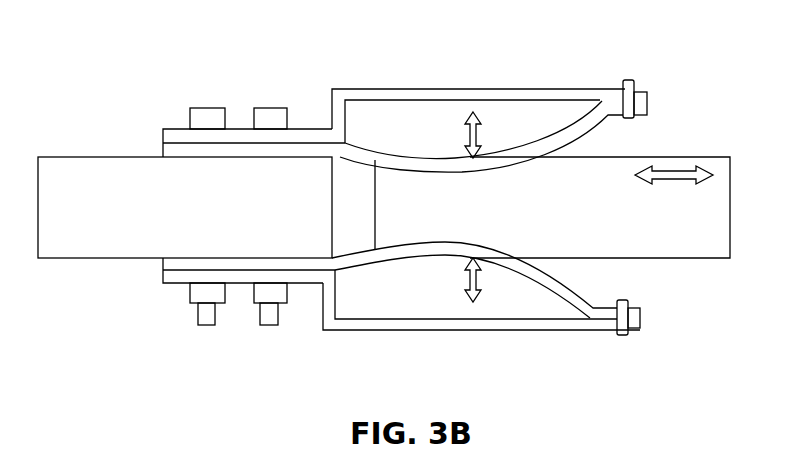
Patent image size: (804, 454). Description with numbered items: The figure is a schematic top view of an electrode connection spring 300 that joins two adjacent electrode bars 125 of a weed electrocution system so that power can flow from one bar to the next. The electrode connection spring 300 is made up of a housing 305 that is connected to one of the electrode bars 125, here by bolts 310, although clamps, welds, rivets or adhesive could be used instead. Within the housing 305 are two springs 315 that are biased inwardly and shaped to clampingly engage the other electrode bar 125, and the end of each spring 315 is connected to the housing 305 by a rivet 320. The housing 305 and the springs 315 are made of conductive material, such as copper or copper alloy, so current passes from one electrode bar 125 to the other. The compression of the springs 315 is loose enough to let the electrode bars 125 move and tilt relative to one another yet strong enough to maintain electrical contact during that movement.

The electrode bar 125 is at (96, 228).
The electrode connection spring 300 is at (427, 177).
The housing 305 is at (415, 88).
The bolts 310 is at (231, 88).
The springs 315 is at (562, 290).
The rivet 320 is at (634, 76).